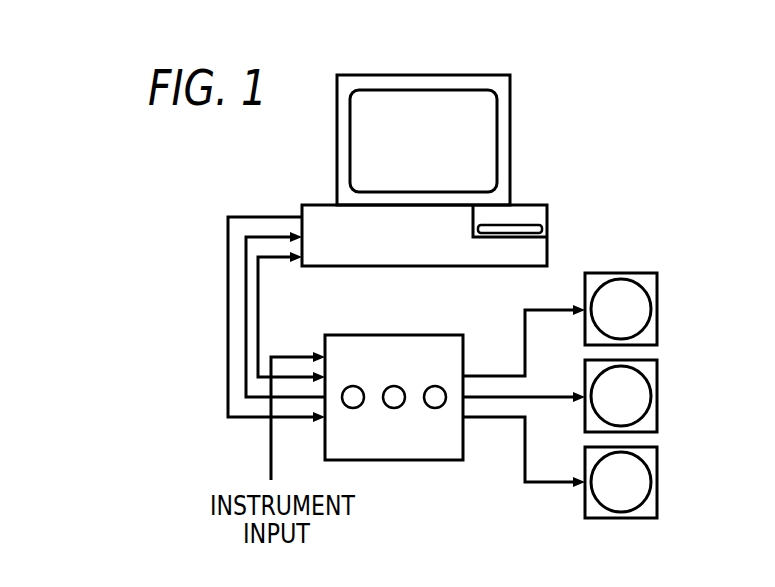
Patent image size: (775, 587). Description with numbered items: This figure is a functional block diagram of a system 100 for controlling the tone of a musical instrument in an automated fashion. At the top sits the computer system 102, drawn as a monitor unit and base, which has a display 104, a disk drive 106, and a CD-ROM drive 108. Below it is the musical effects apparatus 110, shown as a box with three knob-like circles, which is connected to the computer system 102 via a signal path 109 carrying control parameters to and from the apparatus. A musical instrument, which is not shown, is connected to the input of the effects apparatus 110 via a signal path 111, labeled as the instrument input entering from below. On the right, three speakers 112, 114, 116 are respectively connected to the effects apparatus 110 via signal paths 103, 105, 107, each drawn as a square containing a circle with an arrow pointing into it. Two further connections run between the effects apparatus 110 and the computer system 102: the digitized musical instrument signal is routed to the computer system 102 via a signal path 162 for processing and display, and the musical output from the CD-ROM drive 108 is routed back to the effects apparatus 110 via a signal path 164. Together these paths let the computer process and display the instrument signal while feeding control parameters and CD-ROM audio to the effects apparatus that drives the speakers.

The system 100 is at (646, 165).
The computer system 102 is at (540, 253).
The signal path 103 is at (537, 310).
The display 104 is at (482, 153).
The signal path 105 is at (550, 398).
The disk drive 106 is at (537, 210).
The signal path 107 is at (552, 485).
The CD-ROM drive 108 is at (545, 225).
The signal path 109 is at (258, 318).
The musical effects apparatus 110 is at (440, 448).
The signal path 111 is at (271, 447).
The speaker 112 is at (650, 285).
The speaker 114 is at (650, 372).
The speaker 116 is at (650, 458).
The signal path 162 is at (246, 296).
The signal path 164 is at (228, 249).